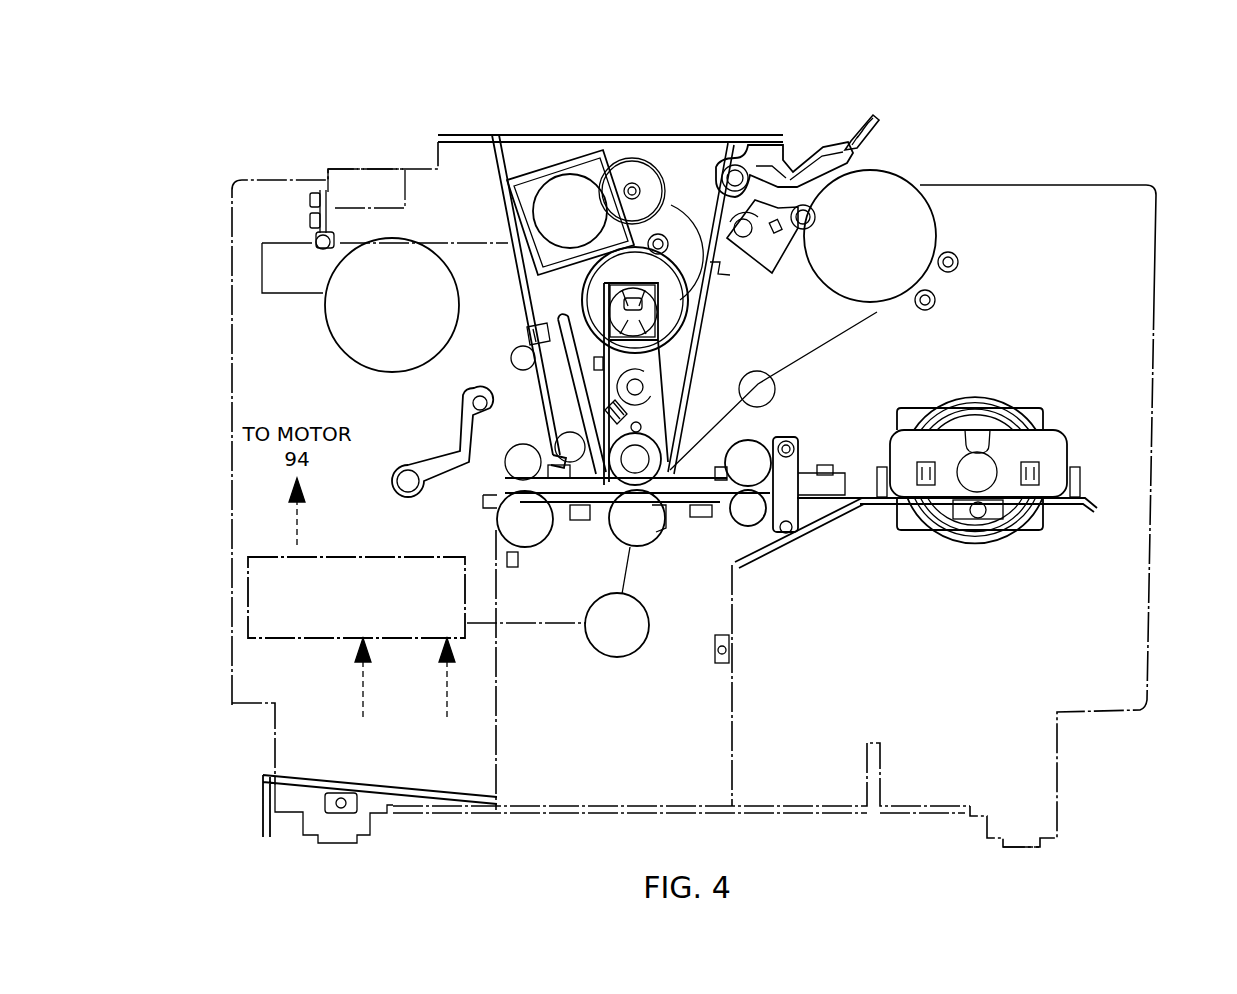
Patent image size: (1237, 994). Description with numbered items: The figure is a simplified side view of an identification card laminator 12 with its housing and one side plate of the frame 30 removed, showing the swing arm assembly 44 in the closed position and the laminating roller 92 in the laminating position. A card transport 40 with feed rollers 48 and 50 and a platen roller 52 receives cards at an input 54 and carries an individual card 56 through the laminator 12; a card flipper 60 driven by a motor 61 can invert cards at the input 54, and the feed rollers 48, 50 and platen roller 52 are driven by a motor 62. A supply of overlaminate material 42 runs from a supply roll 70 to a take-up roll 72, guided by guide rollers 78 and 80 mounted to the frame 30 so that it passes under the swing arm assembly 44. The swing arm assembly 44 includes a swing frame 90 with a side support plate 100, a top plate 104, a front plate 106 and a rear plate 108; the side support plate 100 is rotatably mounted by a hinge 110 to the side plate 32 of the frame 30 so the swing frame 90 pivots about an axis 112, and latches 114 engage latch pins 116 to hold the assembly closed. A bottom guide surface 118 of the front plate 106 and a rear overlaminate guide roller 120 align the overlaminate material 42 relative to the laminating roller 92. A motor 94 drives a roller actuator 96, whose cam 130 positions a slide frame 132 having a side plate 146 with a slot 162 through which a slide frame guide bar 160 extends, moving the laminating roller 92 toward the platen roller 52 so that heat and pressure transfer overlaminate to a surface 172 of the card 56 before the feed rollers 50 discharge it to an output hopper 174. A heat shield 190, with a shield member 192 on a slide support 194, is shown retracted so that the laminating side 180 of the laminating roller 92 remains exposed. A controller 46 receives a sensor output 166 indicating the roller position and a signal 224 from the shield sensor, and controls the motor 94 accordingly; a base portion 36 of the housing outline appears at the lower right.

The identification card laminator 12 is at (1032, 93).
The frame 30 is at (1095, 185).
The side plate 32 is at (1160, 247).
The base 36 is at (1040, 843).
The card transport 40 is at (797, 418).
The supply of overlaminate material 42 is at (845, 335).
The swing arm assembly 44 is at (762, 108).
The controller 46 is at (247, 590).
The feed rollers 48 is at (764, 548).
The feed rollers 50 is at (493, 468).
The platen roller 52 is at (645, 545).
The input 54 is at (1112, 455).
The card 56 is at (738, 520).
The card flipper 60 is at (1030, 388).
The motor 61 is at (1005, 548).
The motor 62 is at (624, 660).
The supply roll 70 is at (345, 338).
The take-up roll 72 is at (935, 228).
The guide roller 78 is at (522, 346).
The guide roller 80 is at (752, 371).
The swing frame 90 is at (512, 218).
The laminating roller 92 is at (637, 485).
The motor 94 is at (560, 183).
The roller actuator 96 is at (606, 298).
The side support plate 100 is at (453, 165).
The top plate 104 is at (650, 135).
The front plate 106 is at (717, 308).
The rear plate 108 is at (520, 274).
The hinge 110 is at (300, 212).
The axis 112 is at (318, 252).
The latches 114 is at (876, 125).
The latch pins 116 is at (750, 224).
The bottom guide surface 118 is at (680, 474).
The rear overlaminate guide roller 120 is at (560, 440).
The cam 130 is at (672, 306).
The slide frame 132 is at (613, 263).
The side plate 146 is at (665, 372).
The slide frame guide bar 160 is at (645, 389).
The slots 162 is at (655, 420).
The output 166 is at (363, 705).
The surface 172 is at (540, 467).
The output hopper 174 is at (370, 760).
The laminating side 180 is at (660, 528).
The heat shield 190 is at (558, 315).
The shield member 192 is at (567, 523).
The slide support 194 is at (520, 385).
The signal 224 is at (447, 716).